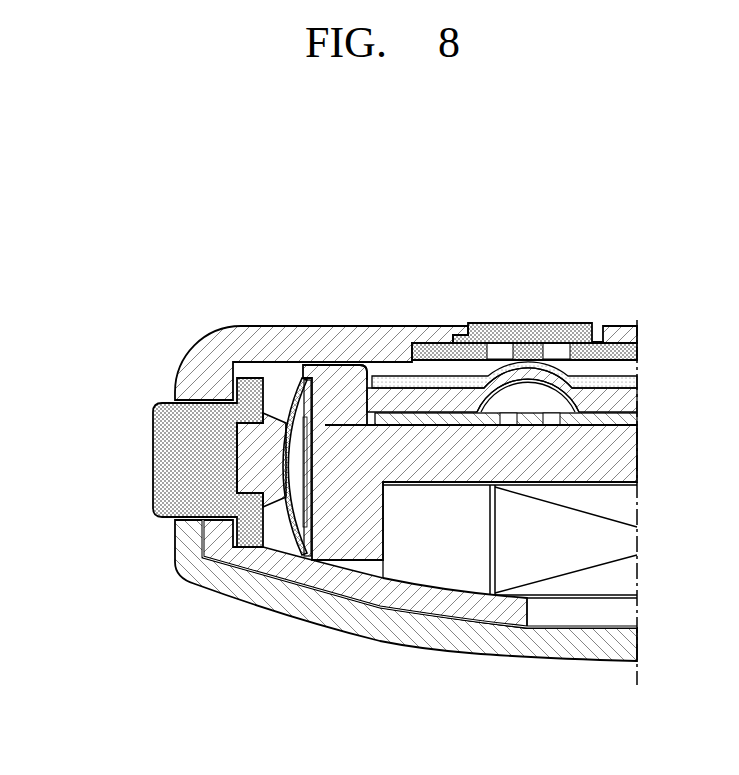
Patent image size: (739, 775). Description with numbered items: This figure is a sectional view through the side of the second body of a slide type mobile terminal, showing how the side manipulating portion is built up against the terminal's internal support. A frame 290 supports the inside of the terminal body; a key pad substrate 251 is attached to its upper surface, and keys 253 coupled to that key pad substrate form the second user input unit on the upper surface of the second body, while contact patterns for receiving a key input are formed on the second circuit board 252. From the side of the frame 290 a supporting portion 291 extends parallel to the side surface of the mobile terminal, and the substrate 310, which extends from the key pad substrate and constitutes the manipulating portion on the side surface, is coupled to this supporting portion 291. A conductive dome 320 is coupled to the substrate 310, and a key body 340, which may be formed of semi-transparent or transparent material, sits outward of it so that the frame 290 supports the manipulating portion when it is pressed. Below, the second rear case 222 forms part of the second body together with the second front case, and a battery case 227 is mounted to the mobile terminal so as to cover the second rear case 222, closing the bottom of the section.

The second rear case 222 is at (360, 595).
The battery case 227 is at (253, 597).
The second circuit board 251 is at (612, 418).
The second circuit board 252 is at (498, 348).
The keys 253 is at (542, 327).
The frame 290 is at (433, 468).
The supporting portion 291 is at (320, 385).
The substrate 310 is at (307, 418).
The conductive dome 320 is at (288, 412).
The key body 340 is at (160, 437).